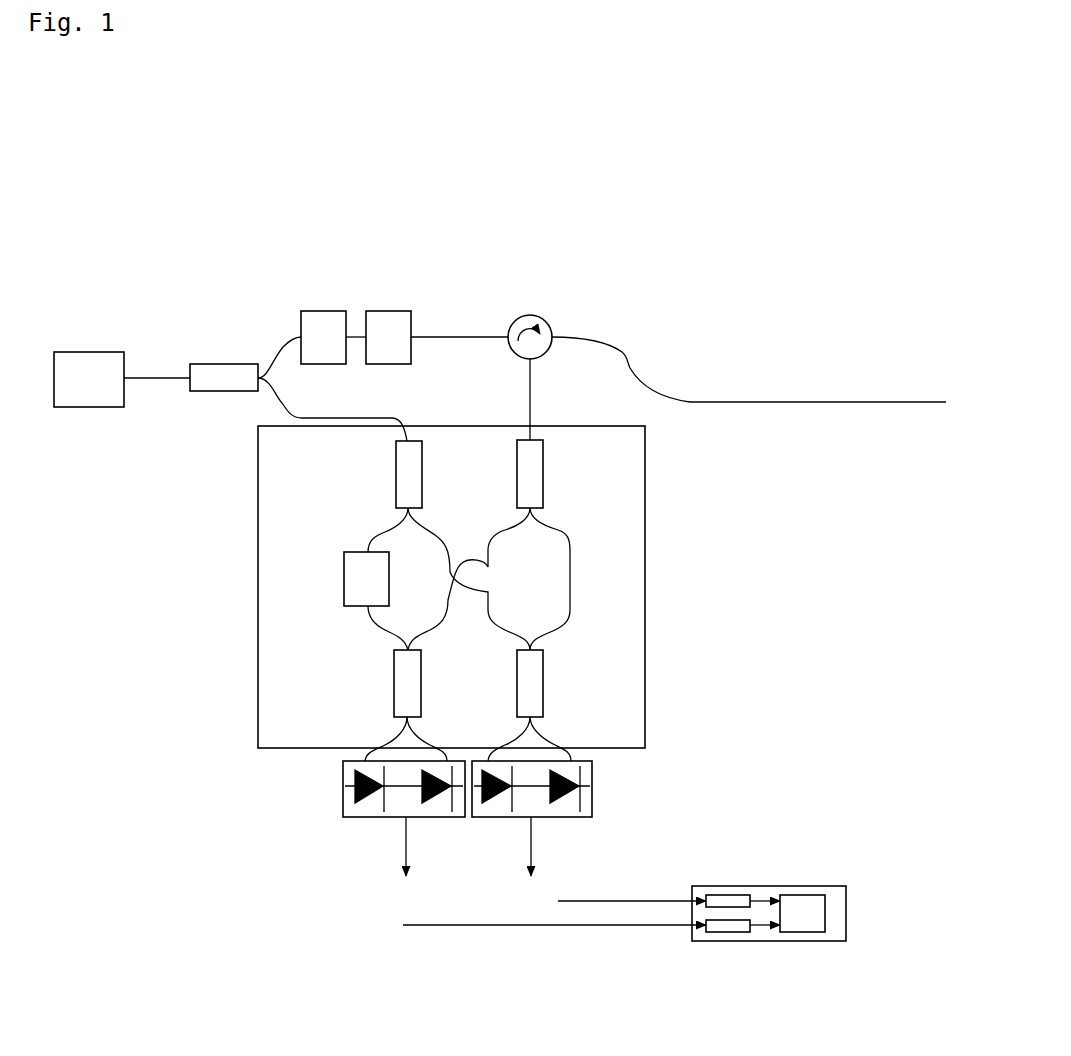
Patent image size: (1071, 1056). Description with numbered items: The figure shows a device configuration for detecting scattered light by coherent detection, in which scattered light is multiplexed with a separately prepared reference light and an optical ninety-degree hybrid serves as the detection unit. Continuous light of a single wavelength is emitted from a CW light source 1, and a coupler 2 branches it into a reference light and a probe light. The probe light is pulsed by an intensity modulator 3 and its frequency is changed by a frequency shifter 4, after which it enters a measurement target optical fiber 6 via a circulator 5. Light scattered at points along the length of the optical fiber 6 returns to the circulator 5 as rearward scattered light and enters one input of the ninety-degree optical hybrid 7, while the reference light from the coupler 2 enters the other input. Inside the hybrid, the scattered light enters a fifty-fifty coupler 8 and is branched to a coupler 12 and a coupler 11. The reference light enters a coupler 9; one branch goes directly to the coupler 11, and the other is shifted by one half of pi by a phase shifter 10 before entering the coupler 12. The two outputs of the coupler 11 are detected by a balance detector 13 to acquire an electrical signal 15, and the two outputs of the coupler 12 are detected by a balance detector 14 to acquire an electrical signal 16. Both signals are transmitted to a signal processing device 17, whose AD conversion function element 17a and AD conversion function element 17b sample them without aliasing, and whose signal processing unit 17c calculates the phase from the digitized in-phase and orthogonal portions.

The CW light source 1 is at (89, 379).
The coupler 2 is at (228, 380).
The intensity modulator 3 is at (320, 325).
The frequency shifter 4 is at (387, 325).
The circulator 5 is at (547, 325).
The measurement target optical fiber 6 is at (776, 402).
The 90-degree optical hybrid 7 is at (645, 562).
The coupler 8 is at (533, 473).
The coupler 9 is at (408, 470).
The phase shifter 10 is at (372, 587).
The coupler 11 is at (530, 684).
The coupler 12 is at (402, 682).
The balance detector 13 is at (592, 786).
The balance detector 14 is at (343, 803).
The electrical signal 15 is at (611, 866).
The electrical signal 16 is at (548, 871).
The signal processing device 17 is at (795, 886).
The AD conversion function element 17a is at (716, 895).
The AD conversion function element 17b is at (731, 920).
The signal processing unit 17c is at (812, 920).